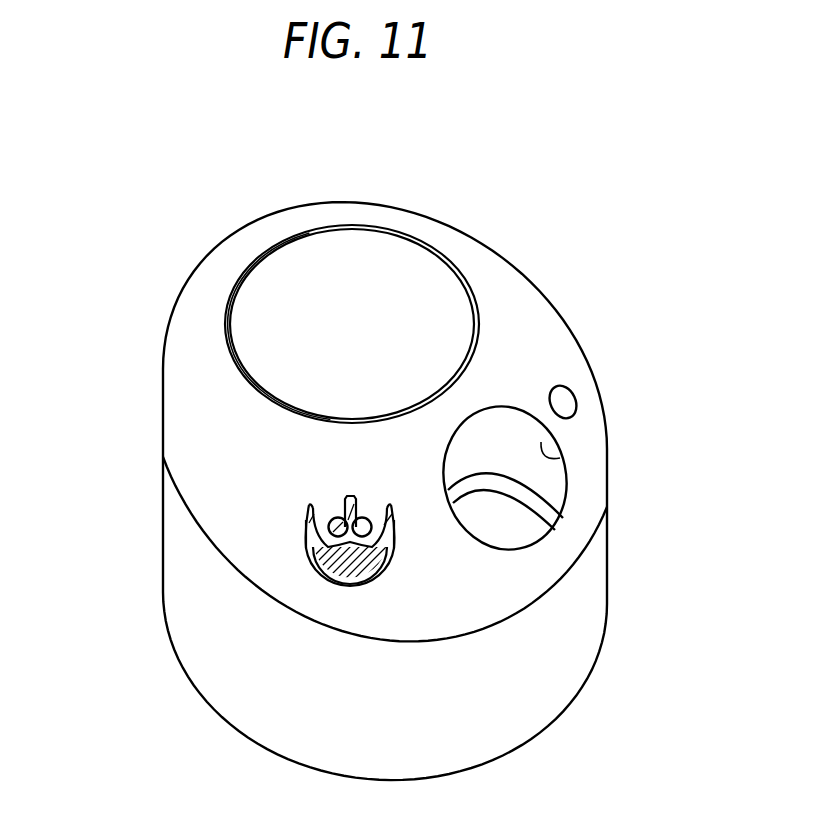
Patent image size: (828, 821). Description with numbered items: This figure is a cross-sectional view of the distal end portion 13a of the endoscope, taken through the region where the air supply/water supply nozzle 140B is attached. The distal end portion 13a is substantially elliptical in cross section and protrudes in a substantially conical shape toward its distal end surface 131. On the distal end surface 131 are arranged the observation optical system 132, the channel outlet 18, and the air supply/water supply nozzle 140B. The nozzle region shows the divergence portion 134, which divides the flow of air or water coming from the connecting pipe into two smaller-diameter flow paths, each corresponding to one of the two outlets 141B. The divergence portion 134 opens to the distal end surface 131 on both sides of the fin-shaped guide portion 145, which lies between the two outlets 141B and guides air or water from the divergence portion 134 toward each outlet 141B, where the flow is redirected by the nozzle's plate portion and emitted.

The distal end portion 13a is at (183, 221).
The distal end surface 131 is at (510, 290).
The observation optical system 132 is at (360, 245).
The channel outlet 18 is at (558, 458).
The air supply/water supply nozzle 140B is at (299, 535).
The divergence portion 134 is at (328, 524).
The outlet 141B is at (325, 508).
The guide portion 145 is at (349, 495).